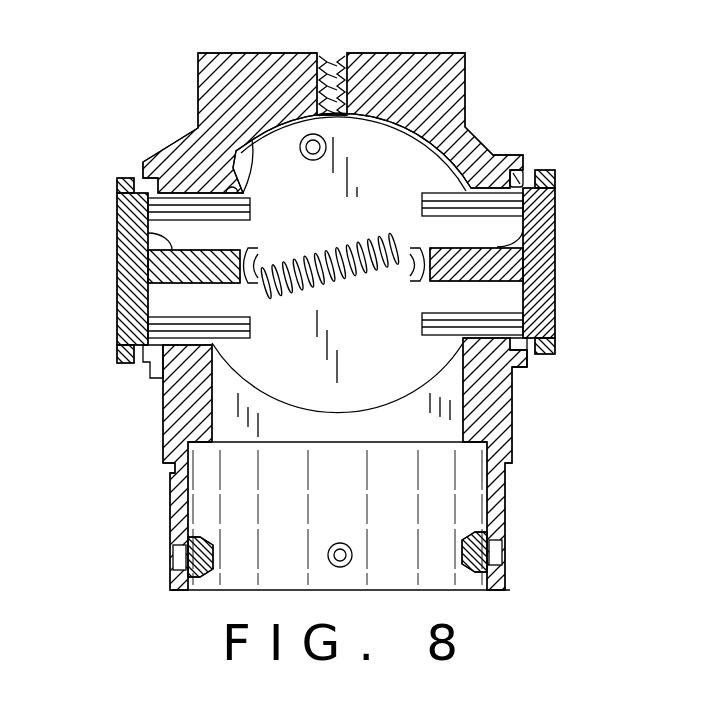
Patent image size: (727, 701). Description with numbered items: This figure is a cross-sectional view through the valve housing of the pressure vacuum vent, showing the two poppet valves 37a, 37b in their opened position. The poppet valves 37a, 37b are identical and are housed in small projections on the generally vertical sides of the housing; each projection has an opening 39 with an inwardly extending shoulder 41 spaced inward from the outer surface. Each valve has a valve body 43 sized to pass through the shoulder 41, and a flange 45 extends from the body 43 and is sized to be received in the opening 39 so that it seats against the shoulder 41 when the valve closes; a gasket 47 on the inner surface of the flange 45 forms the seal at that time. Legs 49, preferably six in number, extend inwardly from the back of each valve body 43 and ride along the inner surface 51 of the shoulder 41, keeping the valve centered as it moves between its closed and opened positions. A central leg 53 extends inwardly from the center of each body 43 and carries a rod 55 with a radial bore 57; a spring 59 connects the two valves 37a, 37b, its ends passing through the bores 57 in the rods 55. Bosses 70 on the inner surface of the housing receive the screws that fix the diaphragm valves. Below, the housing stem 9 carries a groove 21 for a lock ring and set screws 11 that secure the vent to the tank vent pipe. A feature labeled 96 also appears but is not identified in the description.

The boss 70 is at (240, 187).
The leg 49 is at (422, 195).
The inner surface of the shoulder 51 is at (463, 338).
The shoulder 41 is at (517, 168).
The opening 39 is at (548, 170).
The port 96 is at (300, 147).
The spring 59 is at (337, 247).
The rod 55 is at (243, 283).
The poppet valve 37b is at (104, 282).
The poppet valve 37a is at (572, 264).
The valve body 43 is at (572, 305).
The central leg 53 is at (117, 233).
The flange 45 is at (550, 352).
The gasket 47 is at (543, 352).
The radial bore 57 is at (243, 278).
The stem 9 is at (510, 527).
The groove 21 is at (505, 470).
The set screw 11 is at (200, 578).